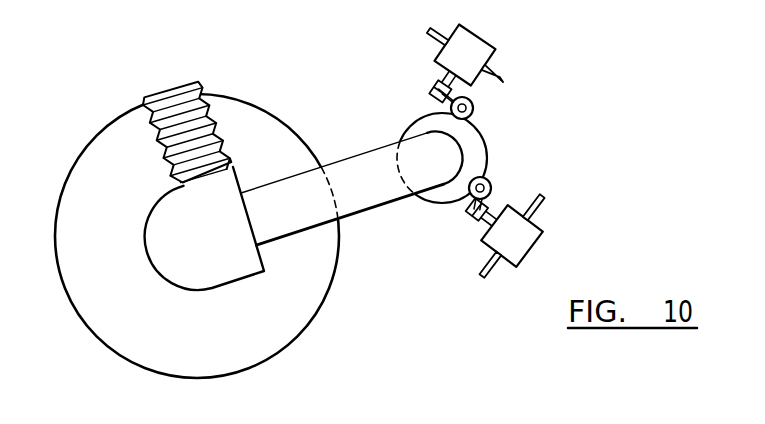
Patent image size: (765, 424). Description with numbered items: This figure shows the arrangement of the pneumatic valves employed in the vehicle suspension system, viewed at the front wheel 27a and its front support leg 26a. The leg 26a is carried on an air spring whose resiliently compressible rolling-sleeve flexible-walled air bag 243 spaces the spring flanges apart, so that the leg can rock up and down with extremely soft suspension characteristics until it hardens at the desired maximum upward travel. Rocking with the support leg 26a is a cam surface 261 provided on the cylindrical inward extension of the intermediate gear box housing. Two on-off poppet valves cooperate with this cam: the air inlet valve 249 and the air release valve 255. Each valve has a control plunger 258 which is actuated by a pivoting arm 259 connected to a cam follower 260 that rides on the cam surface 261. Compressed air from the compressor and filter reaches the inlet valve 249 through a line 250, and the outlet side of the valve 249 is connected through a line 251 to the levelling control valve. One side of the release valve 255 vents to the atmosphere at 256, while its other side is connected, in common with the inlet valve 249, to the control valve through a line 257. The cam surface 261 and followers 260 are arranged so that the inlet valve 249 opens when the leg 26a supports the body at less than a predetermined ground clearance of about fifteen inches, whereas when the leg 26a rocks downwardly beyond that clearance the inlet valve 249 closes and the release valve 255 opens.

The flexible-walled air bag 243 is at (192, 86).
The front wheel 27a is at (273, 133).
The front support leg 26a is at (355, 205).
The cam surface 261 is at (488, 148).
The cam follower 260 is at (477, 109).
The pivoting arm 259 is at (435, 90).
The control plunger 258 is at (460, 88).
The air release valve 255 is at (476, 50).
The atmospheric vent 256 is at (445, 21).
The line 257 is at (497, 68).
The air inlet valve 249 is at (522, 240).
The line 250 is at (542, 208).
The line 251 is at (497, 273).